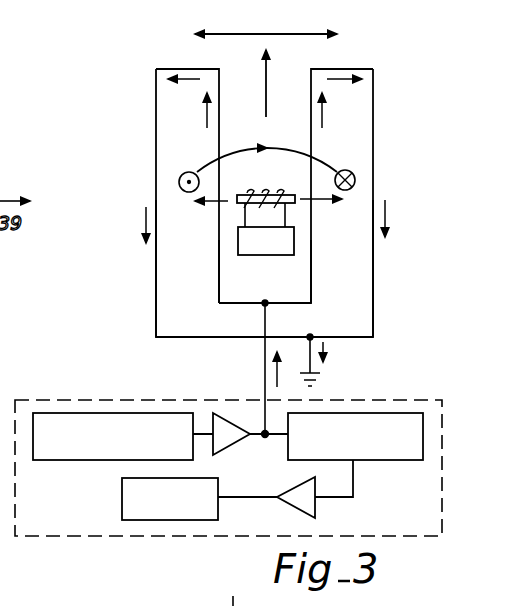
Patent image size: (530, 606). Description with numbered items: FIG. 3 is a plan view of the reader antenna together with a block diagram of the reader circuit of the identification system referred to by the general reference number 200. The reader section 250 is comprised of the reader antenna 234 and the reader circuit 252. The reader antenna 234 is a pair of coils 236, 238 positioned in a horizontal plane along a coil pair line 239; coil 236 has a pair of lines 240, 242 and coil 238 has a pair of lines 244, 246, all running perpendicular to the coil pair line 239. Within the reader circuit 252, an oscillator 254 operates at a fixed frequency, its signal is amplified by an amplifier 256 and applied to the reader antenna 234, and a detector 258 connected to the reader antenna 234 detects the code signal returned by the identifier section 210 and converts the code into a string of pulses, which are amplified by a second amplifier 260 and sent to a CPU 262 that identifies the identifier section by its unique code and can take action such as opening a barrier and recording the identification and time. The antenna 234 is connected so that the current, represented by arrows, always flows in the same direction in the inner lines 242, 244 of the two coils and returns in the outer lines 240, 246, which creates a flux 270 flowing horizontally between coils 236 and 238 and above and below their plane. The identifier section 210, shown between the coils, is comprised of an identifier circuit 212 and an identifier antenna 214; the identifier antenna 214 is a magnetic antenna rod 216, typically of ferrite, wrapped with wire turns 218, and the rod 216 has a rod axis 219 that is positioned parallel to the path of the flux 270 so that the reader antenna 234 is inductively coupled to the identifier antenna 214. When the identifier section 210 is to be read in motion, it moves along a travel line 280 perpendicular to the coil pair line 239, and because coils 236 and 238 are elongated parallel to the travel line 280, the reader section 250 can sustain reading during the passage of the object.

The basic embodiment 200 is at (395, 332).
The identifier section 210 is at (272, 256).
The identifier circuit 212 is at (280, 251).
The identifier antenna 214 is at (300, 202).
The magnetic antenna rod 216 is at (237, 192).
The wire turns 218 is at (285, 181).
The rod axis 219 is at (213, 205).
The reader antenna 234 is at (242, 338).
The coil 236 is at (156, 163).
The coil 238 is at (373, 150).
The coil pair line 239 is at (275, 31).
The line 240 is at (156, 319).
The line 242 is at (219, 252).
The line 244 is at (312, 281).
The line 246 is at (373, 307).
The reader section 250 is at (165, 343).
The reader circuit 252 is at (442, 483).
The oscillator 254 is at (62, 413).
The amplifier 256 is at (216, 412).
The detector 258 is at (377, 413).
The amplifier 260 is at (317, 502).
The CPU 262 is at (118, 502).
The flux 270 is at (255, 148).
The travel line 280 is at (283, 96).